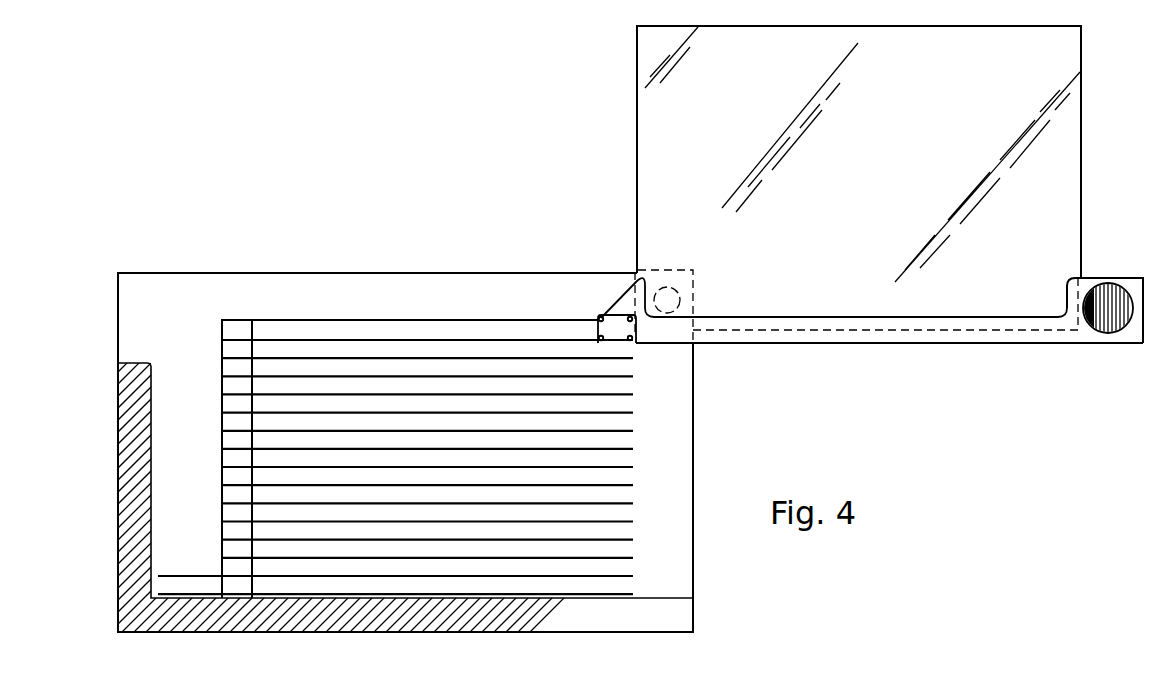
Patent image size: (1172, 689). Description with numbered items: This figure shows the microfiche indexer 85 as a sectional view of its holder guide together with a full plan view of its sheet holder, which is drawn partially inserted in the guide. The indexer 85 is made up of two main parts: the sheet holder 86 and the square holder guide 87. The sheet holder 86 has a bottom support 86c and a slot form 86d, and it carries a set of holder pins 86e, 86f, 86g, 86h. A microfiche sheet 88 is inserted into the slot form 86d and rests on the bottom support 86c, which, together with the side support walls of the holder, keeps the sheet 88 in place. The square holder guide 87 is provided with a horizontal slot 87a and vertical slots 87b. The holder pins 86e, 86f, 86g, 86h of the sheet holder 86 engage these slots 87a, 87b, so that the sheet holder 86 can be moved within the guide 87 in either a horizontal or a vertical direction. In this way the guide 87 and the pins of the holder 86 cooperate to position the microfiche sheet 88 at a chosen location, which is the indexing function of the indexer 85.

The microfiche indexer 85 is at (726, 350).
The sheet holder 86 is at (1076, 278).
The bottom support 86c is at (898, 343).
The slot form 86d is at (890, 318).
The holder pin 86e is at (630, 336).
The holder pin 86f is at (630, 317).
The holder pin 86g is at (601, 317).
The holder pin 86h is at (600, 338).
The square holder guide 87 is at (128, 522).
The horizontal slot 87a is at (325, 318).
The vertical slots 87b is at (222, 424).
The microfiche sheet 88 is at (637, 90).